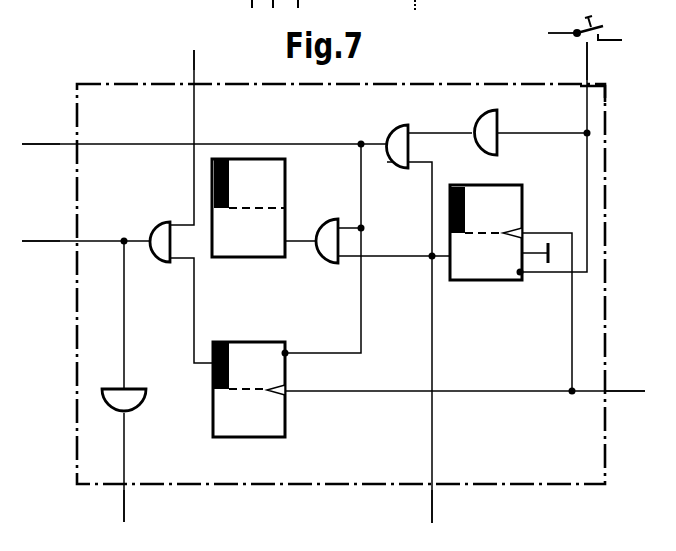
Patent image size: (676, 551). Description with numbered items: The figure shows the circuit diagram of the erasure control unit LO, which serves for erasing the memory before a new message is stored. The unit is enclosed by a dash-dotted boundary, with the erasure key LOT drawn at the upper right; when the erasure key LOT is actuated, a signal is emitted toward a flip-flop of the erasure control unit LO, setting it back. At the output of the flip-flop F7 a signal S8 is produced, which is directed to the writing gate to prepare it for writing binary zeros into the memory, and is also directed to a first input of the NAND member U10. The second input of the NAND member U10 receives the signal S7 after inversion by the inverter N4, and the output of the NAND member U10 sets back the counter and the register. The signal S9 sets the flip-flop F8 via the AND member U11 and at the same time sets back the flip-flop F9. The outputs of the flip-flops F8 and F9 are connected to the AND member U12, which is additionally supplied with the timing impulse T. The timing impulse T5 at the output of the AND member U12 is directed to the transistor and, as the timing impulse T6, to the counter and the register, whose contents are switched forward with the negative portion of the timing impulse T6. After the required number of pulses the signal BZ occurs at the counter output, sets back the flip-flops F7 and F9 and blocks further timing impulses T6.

The AND member U12 is at (156, 223).
The AND member U11 is at (325, 229).
The NAND member U10 is at (398, 129).
The inverter N4 is at (508, 131).
The flip-flop F7 is at (486, 232).
The flip-flop F8 is at (248, 208).
The flip-flop F9 is at (249, 389).
The erasure control unit LO is at (605, 304).
The erasure key LOT is at (592, 23).
The timing impulse T is at (186, 50).
The timing impulse T5 is at (53, 233).
The timing impulse T6 is at (133, 493).
The signal S7 is at (595, 50).
The signal S8 is at (442, 493).
The signal S9 is at (53, 137).
The signal BZ is at (640, 387).